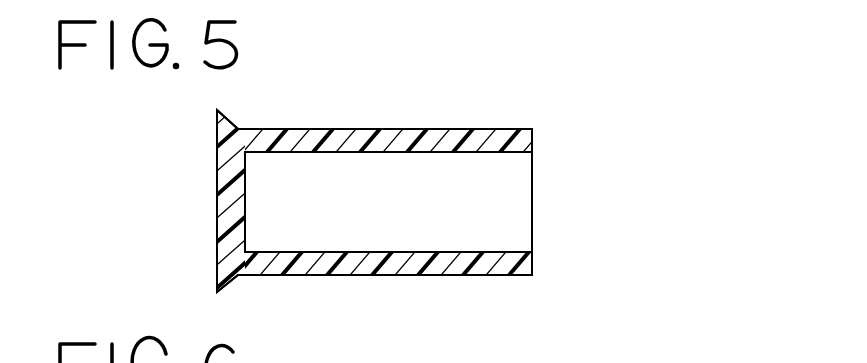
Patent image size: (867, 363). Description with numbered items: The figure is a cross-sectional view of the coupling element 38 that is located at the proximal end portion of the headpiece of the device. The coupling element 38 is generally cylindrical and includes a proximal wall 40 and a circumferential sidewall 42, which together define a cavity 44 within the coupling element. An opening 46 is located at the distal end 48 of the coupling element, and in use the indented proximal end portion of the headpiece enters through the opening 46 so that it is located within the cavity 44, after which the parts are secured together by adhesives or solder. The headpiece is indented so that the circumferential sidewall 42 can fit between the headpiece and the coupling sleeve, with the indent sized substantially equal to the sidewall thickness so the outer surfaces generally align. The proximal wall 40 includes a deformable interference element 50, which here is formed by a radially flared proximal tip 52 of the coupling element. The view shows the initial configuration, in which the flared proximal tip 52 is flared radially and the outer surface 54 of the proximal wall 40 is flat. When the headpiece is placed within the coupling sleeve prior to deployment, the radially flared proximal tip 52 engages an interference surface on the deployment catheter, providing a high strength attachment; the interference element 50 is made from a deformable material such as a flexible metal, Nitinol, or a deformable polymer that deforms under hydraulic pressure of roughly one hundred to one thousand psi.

The coupling element 38 is at (483, 91).
The proximal wall 40 is at (233, 202).
The circumferential sidewall 42 is at (387, 128).
The cavity 44 is at (363, 232).
The opening 46 is at (521, 177).
The distal end 48 is at (497, 266).
The deformable interference element 50 is at (218, 247).
The radially flared proximal tip 52 is at (226, 112).
The outer surface of the proximal wall 54 is at (218, 193).